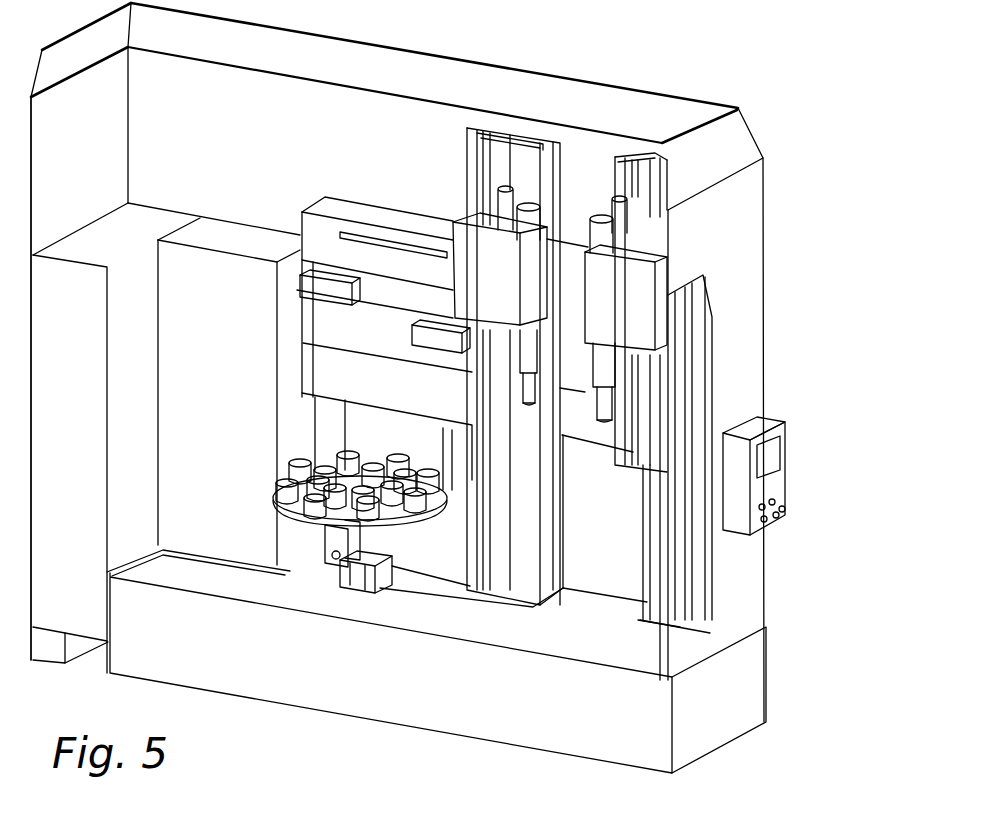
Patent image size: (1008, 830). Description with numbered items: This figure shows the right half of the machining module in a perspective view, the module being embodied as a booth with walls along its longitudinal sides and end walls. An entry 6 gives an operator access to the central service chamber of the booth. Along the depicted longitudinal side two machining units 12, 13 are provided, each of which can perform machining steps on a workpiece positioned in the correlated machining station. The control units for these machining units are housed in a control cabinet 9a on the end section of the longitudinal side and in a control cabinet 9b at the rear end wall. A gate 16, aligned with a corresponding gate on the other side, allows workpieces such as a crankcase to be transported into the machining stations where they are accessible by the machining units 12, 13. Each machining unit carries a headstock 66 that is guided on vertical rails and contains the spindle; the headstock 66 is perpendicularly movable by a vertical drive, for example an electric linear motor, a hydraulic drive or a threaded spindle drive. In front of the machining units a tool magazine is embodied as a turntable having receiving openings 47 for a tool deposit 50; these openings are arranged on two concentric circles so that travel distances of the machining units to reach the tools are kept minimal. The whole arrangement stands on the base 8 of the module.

The entry 6 is at (688, 583).
The base 8 is at (443, 707).
The control cabinet 9a is at (240, 374).
The control cabinet 9b is at (90, 387).
The machining unit 12 is at (641, 145).
The machining unit 13 is at (511, 122).
The gate 16 is at (617, 506).
The receiving openings 47 is at (393, 513).
The tool deposit 50 is at (422, 502).
The headstock 66 is at (504, 283).